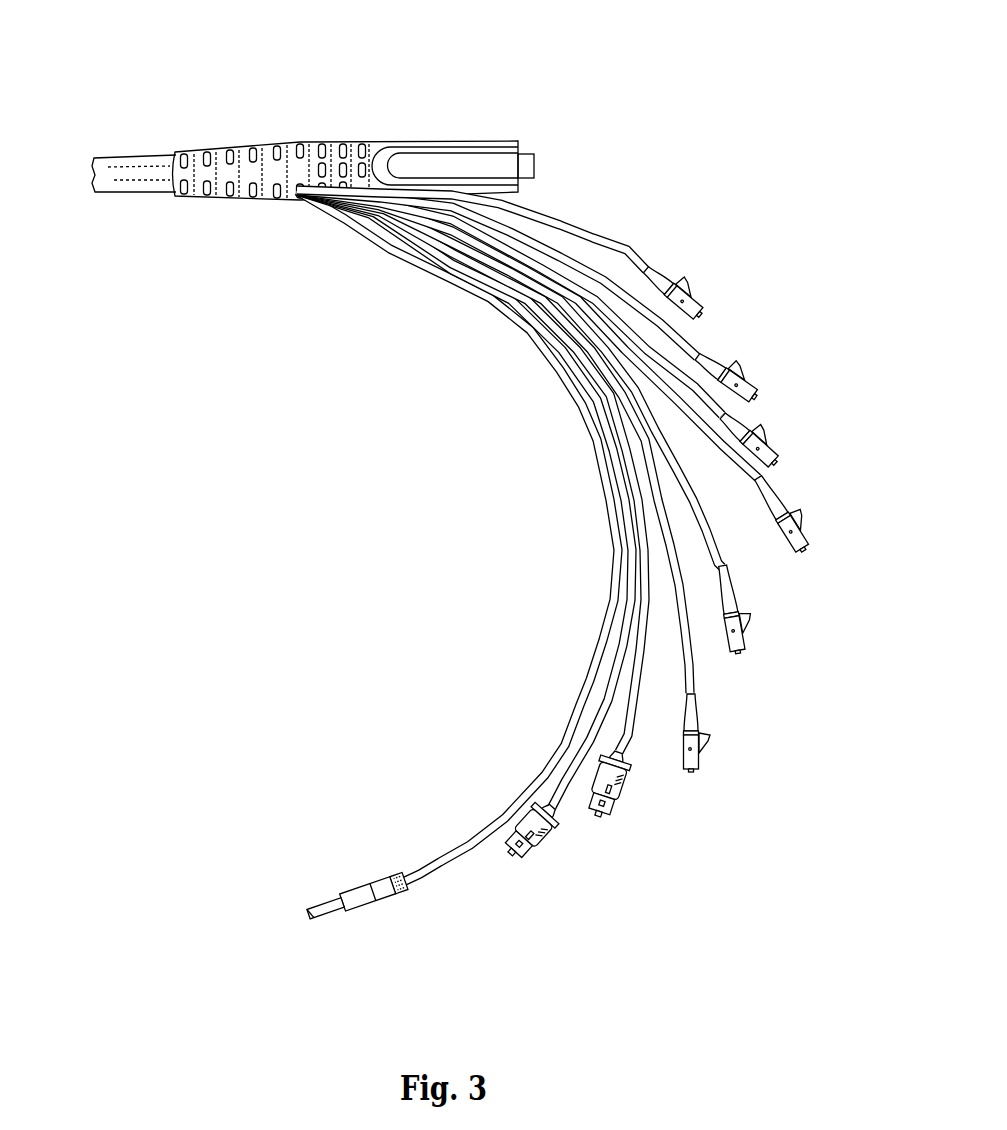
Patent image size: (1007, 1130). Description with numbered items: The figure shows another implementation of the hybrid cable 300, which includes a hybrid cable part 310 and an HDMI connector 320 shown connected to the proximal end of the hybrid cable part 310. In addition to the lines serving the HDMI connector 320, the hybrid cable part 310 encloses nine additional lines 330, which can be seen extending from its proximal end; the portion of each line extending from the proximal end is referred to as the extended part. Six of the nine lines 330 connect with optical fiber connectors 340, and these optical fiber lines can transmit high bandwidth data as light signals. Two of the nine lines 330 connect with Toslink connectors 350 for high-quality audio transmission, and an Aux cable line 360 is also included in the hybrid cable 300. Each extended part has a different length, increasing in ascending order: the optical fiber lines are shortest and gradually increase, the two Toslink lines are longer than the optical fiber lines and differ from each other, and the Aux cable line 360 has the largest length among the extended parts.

The hybrid cable 300 is at (662, 126).
The hybrid cable part 310 is at (153, 195).
The HDMI connector 320 is at (500, 139).
The nine additional lines 330 is at (423, 247).
The optical fiber connectors 340 is at (750, 382).
The Toslink connectors 350 is at (626, 792).
The Aux cable line 360 is at (345, 889).